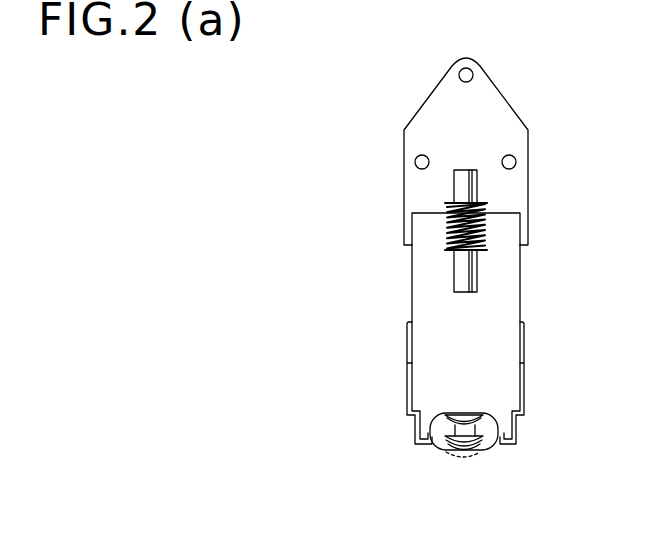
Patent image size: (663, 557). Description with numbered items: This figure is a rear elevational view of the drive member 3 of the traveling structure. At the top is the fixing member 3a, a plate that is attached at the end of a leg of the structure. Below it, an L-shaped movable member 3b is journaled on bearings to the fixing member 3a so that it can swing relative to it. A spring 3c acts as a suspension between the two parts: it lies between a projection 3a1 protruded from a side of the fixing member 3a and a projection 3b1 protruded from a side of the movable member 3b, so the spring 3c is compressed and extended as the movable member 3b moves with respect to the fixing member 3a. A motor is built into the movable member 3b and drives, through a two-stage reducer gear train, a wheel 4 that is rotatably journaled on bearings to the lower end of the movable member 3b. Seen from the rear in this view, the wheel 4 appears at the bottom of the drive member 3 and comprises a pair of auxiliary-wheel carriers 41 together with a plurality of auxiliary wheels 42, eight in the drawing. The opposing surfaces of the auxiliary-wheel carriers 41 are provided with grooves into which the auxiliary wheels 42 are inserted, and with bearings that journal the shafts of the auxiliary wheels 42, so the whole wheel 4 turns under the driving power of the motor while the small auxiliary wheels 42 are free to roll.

The drive member 3 is at (547, 300).
The fixing member 3a is at (499, 130).
The projection 3a1 is at (461, 184).
The movable member 3b is at (447, 340).
The projection 3b1 is at (461, 277).
The spring 3c is at (481, 229).
The wheel 4 is at (462, 465).
The auxiliary-wheel carrier 41 is at (489, 437).
The auxiliary wheel 42 is at (442, 448).